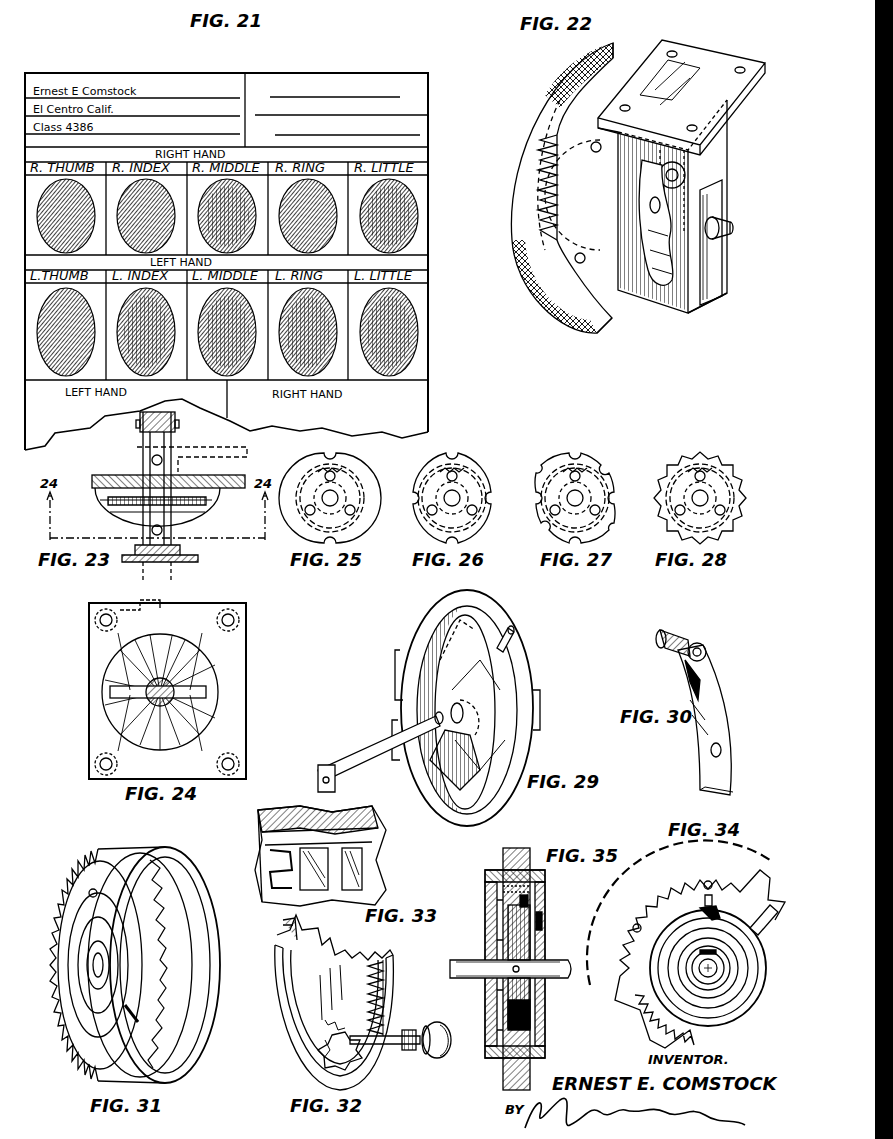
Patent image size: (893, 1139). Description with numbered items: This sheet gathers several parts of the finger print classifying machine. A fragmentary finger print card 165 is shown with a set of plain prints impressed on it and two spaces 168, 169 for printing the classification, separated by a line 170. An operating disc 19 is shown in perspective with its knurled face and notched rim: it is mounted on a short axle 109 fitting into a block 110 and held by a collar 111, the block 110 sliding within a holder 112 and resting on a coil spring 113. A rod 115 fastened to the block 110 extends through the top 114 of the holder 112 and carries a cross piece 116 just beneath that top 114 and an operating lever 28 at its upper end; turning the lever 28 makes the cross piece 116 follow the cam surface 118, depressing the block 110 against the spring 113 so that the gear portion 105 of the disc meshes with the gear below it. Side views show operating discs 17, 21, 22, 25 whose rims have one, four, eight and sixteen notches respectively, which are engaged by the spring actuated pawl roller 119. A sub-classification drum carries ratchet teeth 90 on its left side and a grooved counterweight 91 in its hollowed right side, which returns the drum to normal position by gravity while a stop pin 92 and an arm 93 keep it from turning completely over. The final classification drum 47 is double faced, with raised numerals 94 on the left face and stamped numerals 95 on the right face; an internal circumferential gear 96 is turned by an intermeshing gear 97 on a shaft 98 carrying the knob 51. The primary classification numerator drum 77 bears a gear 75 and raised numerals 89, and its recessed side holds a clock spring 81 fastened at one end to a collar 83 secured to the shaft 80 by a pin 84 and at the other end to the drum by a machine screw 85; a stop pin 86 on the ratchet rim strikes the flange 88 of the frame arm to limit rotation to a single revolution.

In FIG. 21, the classification space 168 is at (400, 97).
In FIG. 21, the separating line 170 is at (428, 115).
In FIG. 21, the classification space 169 is at (420, 135).
In FIG. 21, the finger print card 165 is at (418, 222).
In FIG. 22, the cross piece 116 is at (706, 100).
In FIG. 23, the cross piece 116 is at (200, 505).
In FIG. 22, the operating disc gear 105 is at (540, 192).
In FIG. 22, the block 110 is at (700, 170).
In FIG. 22, the collar 111 is at (725, 212).
In FIG. 22, the short axle 109 is at (731, 232).
In FIG. 22, the coil spring 113 is at (660, 292).
In FIG. 22, the holder 112 is at (694, 310).
In FIG. 22, the operating disc 19 is at (578, 328).
In FIG. 23, the operating lever 28 is at (176, 422).
In FIG. 23, the rod 115 is at (143, 470).
In FIG. 23, the top 114 is at (230, 475).
In FIG. 24, the top 114 is at (238, 663).
In FIG. 23, the cam surface 118 is at (125, 514).
In FIG. 25, the operating disc 17 is at (372, 484).
In FIG. 26, the operating disc 21 is at (495, 482).
In FIG. 27, the operating disc 22 is at (618, 482).
In FIG. 28, the operating disc 25 is at (740, 480).
In FIG. 29, the counterweight 91 is at (490, 762).
In FIG. 29, the flange 88 is at (461, 712).
In FIG. 29, the ratchet teeth 90 is at (398, 660).
In FIG. 29, the stop pin 92 is at (516, 648).
In FIG. 29, the arm 93 is at (395, 748).
In FIG. 30, the pawl roller 119 is at (692, 637).
In FIG. 31, the numerals 95 is at (213, 952).
In FIG. 33, the numerals 95 is at (352, 870).
In FIG. 32, the numerals 95 is at (305, 948).
In FIG. 31, the numerals 94 is at (188, 1058).
In FIG. 33, the numerals 94 is at (262, 860).
In FIG. 32, the numerals 94 is at (292, 1068).
In FIG. 31, the final classification drum 47 is at (190, 1048).
In FIG. 31, the clock spring 81 is at (80, 1055).
In FIG. 34, the clock spring 81 is at (738, 1012).
In FIG. 32, the internal circumferential gear 96 is at (385, 982).
In FIG. 32, the intermeshing gear 97 is at (362, 1058).
In FIG. 32, the shaft 98 is at (395, 1032).
In FIG. 32, the knob 51 is at (440, 1058).
In FIG. 35, the raised numerals 89 is at (514, 848).
In FIG. 34, the raised numerals 89 is at (648, 866).
In FIG. 35, the primary classification numerator drum 77 is at (598, 1010).
In FIG. 34, the primary classification numerator drum 77 is at (700, 959).
In FIG. 35, the shaft 80 is at (466, 964).
In FIG. 35, the pin 84 is at (522, 966).
In FIG. 35, the collar 83 is at (532, 985).
In FIG. 35, the machine screw 85 is at (532, 912).
In FIG. 34, the machine screw 85 is at (718, 906).
In FIG. 35, the stop pin 86 is at (544, 920).
In FIG. 34, the stop pin 86 is at (762, 922).
In FIG. 34, the gear 75 is at (690, 1008).